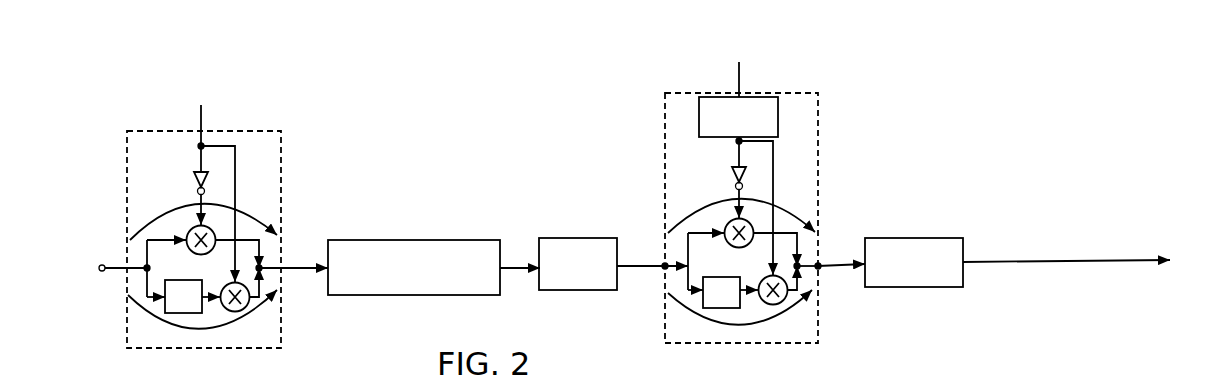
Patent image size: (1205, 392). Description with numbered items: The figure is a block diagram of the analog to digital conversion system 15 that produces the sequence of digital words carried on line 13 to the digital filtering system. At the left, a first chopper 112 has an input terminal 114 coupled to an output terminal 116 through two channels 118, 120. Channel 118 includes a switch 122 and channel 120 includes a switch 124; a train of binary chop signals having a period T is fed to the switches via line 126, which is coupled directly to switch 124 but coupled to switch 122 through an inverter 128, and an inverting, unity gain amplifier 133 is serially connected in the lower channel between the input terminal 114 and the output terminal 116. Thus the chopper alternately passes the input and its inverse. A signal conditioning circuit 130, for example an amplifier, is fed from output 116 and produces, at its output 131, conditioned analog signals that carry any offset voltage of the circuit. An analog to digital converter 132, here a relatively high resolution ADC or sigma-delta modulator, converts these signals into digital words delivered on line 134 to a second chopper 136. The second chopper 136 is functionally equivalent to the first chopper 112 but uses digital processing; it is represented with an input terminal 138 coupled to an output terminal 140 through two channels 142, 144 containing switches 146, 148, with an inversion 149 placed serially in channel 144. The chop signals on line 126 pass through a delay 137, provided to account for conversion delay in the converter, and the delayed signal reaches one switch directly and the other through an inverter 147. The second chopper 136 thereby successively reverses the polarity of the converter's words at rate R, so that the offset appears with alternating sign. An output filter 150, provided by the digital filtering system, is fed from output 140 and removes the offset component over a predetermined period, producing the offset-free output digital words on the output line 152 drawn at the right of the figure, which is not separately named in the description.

The analog to digital conversion system 15 is at (550, 93).
The first chopper 112 is at (256, 131).
The input terminal 114 is at (145, 270).
The output terminal 116 is at (262, 271).
The channel 118 is at (130, 218).
The channel 120 is at (130, 317).
The switch 122 is at (196, 253).
The switch 124 is at (240, 311).
The line 126 is at (199, 116).
The inverter 128 is at (195, 180).
The signal conditioning circuit 130 is at (366, 240).
The output 131 is at (505, 265).
The analog to digital converter 132 is at (546, 238).
The inverting, unity gain amplifier 133 is at (185, 280).
The line 134 is at (620, 265).
The second chopper 136 is at (793, 93).
The delay 137 is at (699, 115).
The input terminal 138 is at (665, 274).
The output terminal 140 is at (806, 270).
The channel 142 is at (685, 215).
The channel 144 is at (685, 312).
The switch 146 is at (735, 247).
The inverter 147 is at (732, 173).
The switch 148 is at (778, 306).
The inversion 149 is at (724, 277).
The line 13 is at (833, 263).
The output filter 150 is at (908, 238).
The filtered output line 152 is at (1040, 262).